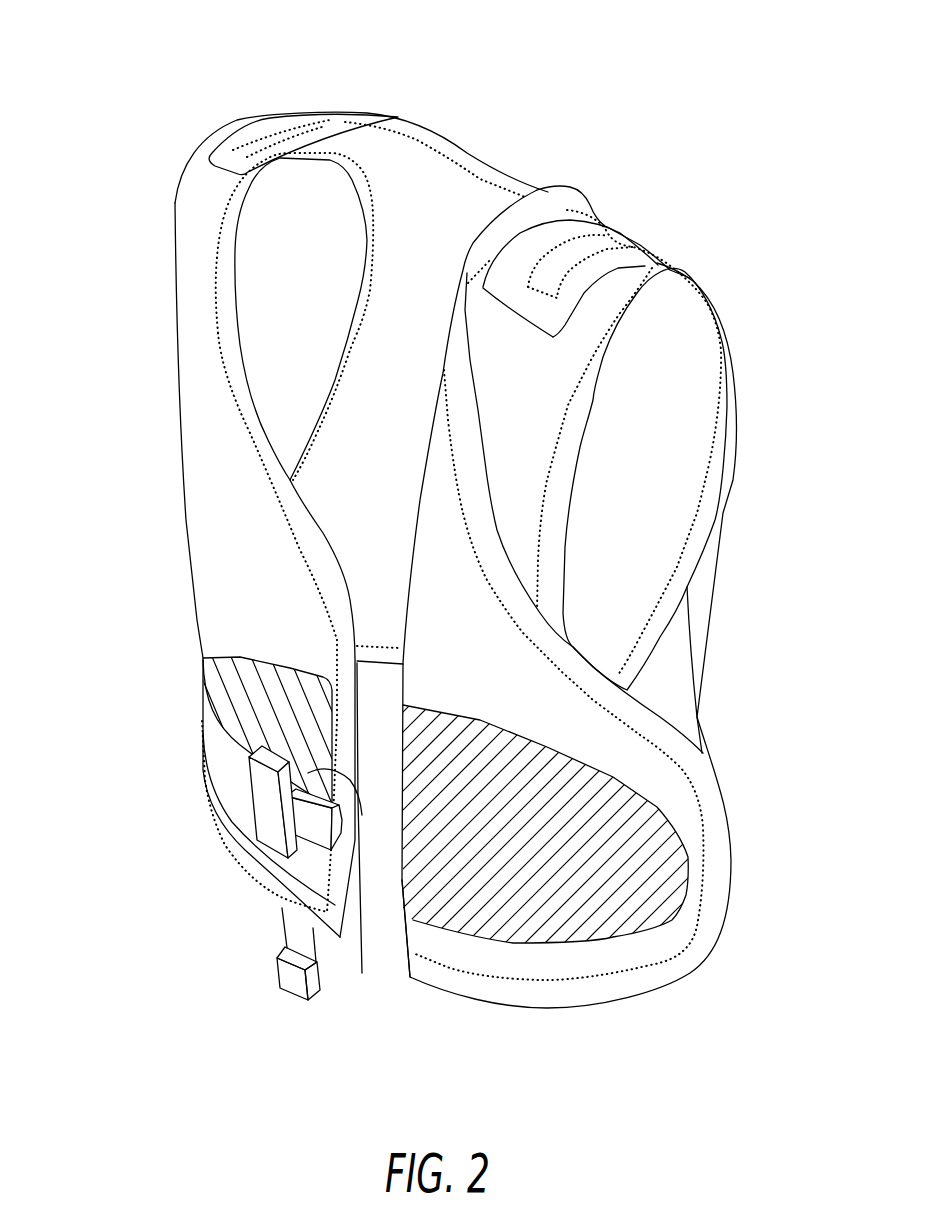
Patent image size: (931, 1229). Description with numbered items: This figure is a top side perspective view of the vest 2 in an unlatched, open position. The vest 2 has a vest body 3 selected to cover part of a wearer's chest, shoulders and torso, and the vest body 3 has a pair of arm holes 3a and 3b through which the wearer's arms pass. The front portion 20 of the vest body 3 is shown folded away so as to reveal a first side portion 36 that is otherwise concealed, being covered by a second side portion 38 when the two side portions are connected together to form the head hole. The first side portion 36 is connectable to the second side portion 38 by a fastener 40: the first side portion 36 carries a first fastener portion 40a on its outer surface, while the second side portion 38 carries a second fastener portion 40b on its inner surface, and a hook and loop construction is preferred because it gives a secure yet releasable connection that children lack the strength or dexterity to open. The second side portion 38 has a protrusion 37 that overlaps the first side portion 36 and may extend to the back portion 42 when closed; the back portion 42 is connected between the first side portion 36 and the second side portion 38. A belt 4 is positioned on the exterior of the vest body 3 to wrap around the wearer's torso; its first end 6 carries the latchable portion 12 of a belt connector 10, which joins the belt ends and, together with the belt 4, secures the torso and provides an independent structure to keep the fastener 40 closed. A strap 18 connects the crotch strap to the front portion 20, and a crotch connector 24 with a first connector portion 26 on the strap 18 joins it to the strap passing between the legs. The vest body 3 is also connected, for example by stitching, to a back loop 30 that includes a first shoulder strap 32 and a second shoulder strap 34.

The vest 2 is at (148, 165).
The vest body 3 is at (222, 517).
The arm hole 3a is at (294, 316).
The arm hole 3b is at (632, 481).
The belt 4 is at (217, 757).
The first end 6 is at (212, 728).
The belt connector 10 is at (270, 835).
The latchable portion 12 is at (268, 796).
The strap 18 is at (297, 927).
The front portion 20 is at (205, 460).
The crotch connector 24 is at (293, 988).
The first connector portion 26 is at (287, 980).
The back loop 30 is at (563, 240).
The first shoulder strap 32 is at (225, 157).
The second shoulder strap 34 is at (610, 262).
The first side portion 36 is at (362, 973).
The protrusion 37 is at (660, 770).
The second side portion 38 is at (703, 823).
The fastener 40 is at (512, 800).
The first fastener portion 40a is at (220, 665).
The second fastener portion 40b is at (558, 943).
The back portion 42 is at (532, 583).